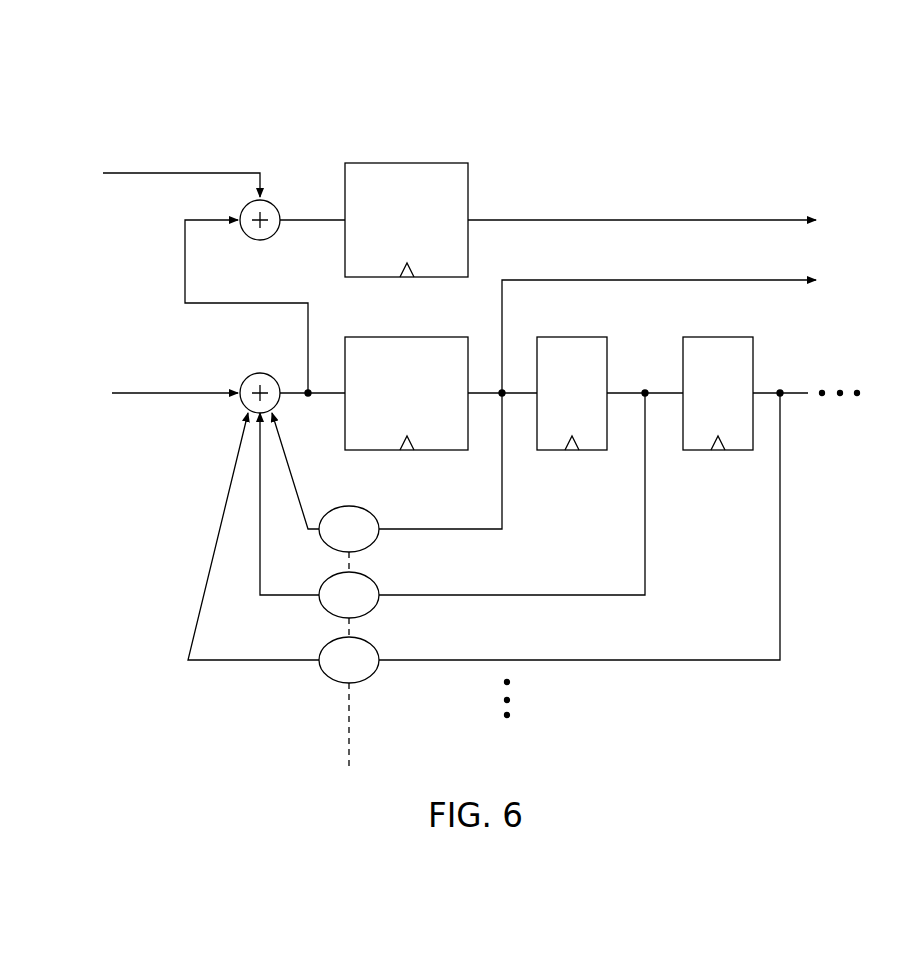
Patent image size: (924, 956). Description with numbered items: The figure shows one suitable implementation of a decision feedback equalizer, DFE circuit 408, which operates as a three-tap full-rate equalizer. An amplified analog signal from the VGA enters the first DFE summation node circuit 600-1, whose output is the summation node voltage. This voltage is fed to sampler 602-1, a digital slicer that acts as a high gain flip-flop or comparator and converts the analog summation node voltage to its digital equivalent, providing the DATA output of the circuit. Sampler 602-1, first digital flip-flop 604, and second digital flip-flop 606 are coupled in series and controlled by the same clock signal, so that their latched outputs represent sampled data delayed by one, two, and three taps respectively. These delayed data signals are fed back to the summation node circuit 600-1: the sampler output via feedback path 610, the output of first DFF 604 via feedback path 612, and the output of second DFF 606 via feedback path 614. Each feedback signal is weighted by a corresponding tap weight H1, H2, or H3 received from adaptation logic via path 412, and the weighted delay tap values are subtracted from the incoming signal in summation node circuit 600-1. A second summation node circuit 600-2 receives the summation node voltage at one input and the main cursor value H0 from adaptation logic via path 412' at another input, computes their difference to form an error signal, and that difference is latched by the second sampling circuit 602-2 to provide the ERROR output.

The DFE circuit 408 is at (708, 86).
The path 412' is at (193, 162).
The path 412 is at (313, 661).
The first DFE summation node circuit 600-1 is at (261, 373).
The second summation node circuit 600-2 is at (255, 241).
The sampler 602-1 is at (438, 450).
The second sampling circuit 602-2 is at (410, 163).
The first digital flip-flop 604 is at (572, 337).
The second digital flip-flop 606 is at (722, 337).
The feedback path 610 is at (503, 487).
The feedback path 612 is at (646, 527).
The feedback path 614 is at (781, 527).